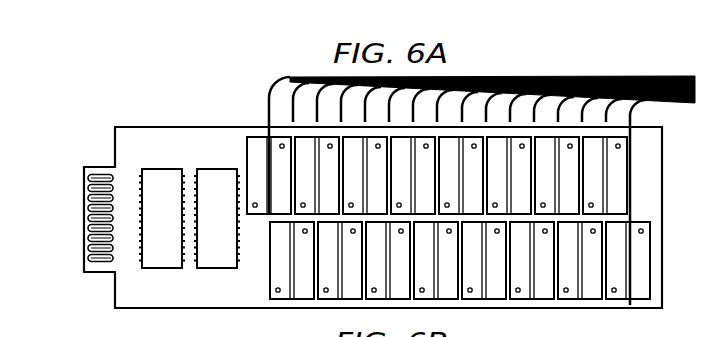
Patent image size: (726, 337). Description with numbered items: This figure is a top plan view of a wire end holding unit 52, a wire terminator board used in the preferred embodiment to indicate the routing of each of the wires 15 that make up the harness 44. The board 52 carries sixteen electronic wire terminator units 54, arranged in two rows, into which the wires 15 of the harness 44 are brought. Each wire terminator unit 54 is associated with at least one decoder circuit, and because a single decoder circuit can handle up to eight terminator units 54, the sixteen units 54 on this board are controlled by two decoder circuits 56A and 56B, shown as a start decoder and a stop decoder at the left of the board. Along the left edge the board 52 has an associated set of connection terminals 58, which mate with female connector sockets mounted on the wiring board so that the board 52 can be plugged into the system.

The wires 15 is at (612, 106).
The harness 44 is at (588, 77).
The wire end holding unit 52 is at (653, 178).
The wire terminator unit 54 is at (515, 296).
The decoder circuit 56A is at (153, 169).
The decoder circuit 56B is at (207, 169).
The connection terminals 58 is at (88, 176).